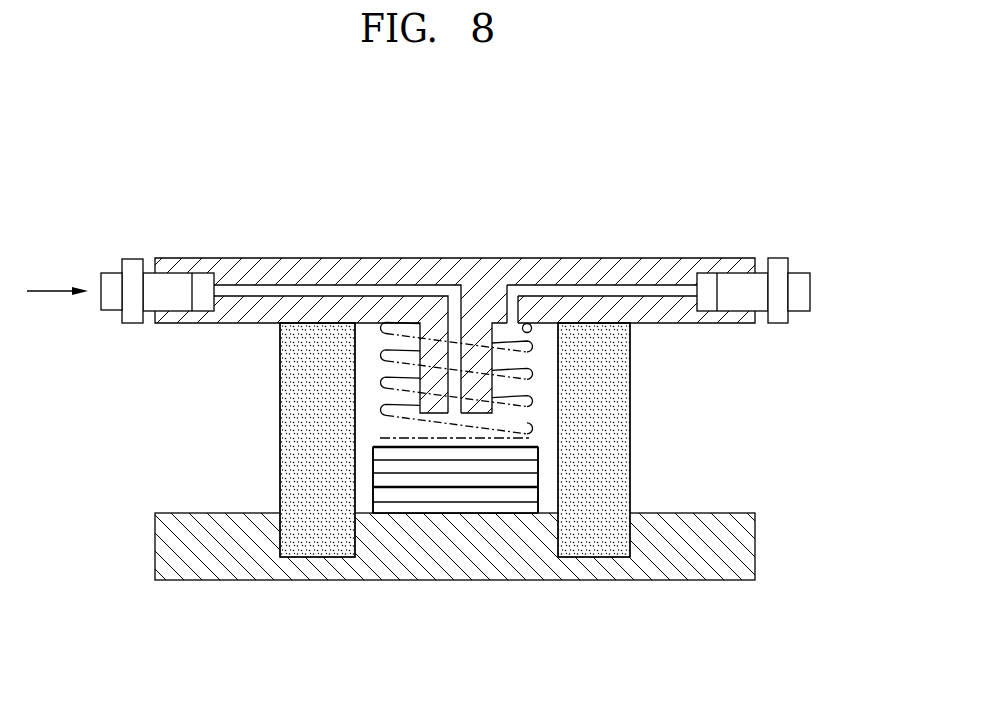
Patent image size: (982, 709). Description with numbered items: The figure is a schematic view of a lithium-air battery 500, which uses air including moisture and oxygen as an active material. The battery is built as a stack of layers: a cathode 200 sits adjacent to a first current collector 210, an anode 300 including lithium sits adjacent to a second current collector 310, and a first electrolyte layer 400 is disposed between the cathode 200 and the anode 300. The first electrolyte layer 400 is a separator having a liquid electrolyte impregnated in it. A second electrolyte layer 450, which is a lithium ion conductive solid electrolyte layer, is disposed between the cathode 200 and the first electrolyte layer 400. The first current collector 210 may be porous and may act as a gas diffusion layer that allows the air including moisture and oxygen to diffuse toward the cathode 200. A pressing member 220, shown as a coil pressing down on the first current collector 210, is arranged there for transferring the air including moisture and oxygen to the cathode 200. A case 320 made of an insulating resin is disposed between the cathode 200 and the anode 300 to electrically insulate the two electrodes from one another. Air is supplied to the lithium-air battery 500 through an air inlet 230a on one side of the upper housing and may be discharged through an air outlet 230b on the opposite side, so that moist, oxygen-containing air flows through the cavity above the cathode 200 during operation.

The lithium-air battery 500 is at (135, 202).
The air inlet 230a is at (113, 300).
The air outlet 230b is at (798, 302).
The pressing member 220 is at (533, 377).
The first current collector 210 is at (530, 453).
The cathode 200 is at (533, 466).
The second electrolyte layer 450 is at (530, 480).
The first electrolyte layer 400 is at (530, 493).
The anode 300 is at (527, 507).
The second current collector 310 is at (167, 547).
The case 320 is at (290, 423).